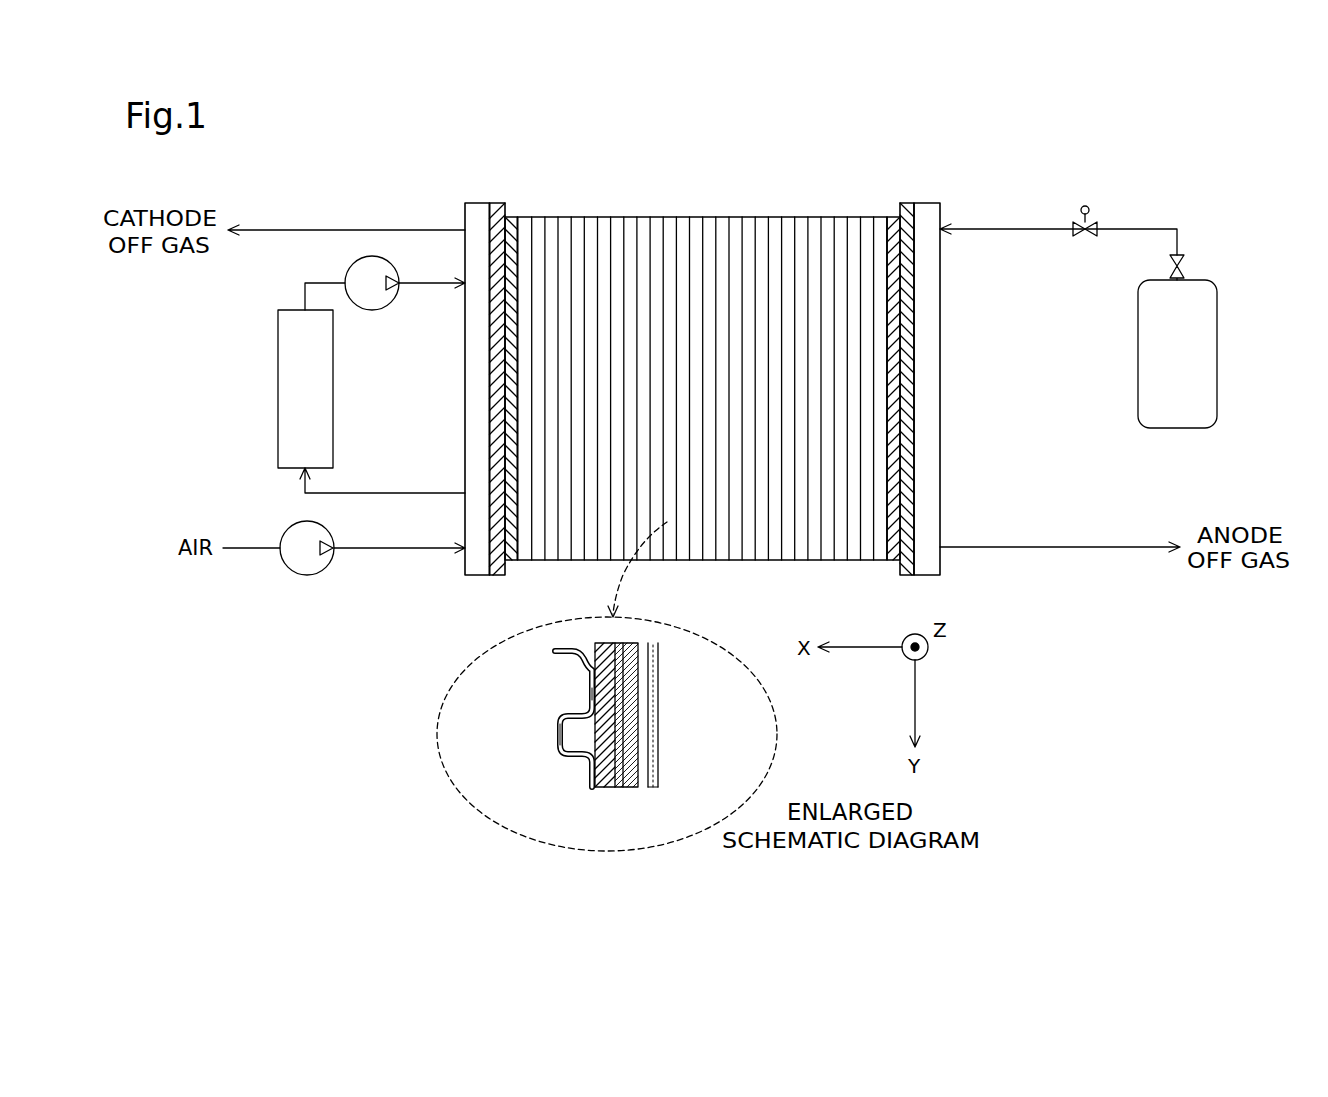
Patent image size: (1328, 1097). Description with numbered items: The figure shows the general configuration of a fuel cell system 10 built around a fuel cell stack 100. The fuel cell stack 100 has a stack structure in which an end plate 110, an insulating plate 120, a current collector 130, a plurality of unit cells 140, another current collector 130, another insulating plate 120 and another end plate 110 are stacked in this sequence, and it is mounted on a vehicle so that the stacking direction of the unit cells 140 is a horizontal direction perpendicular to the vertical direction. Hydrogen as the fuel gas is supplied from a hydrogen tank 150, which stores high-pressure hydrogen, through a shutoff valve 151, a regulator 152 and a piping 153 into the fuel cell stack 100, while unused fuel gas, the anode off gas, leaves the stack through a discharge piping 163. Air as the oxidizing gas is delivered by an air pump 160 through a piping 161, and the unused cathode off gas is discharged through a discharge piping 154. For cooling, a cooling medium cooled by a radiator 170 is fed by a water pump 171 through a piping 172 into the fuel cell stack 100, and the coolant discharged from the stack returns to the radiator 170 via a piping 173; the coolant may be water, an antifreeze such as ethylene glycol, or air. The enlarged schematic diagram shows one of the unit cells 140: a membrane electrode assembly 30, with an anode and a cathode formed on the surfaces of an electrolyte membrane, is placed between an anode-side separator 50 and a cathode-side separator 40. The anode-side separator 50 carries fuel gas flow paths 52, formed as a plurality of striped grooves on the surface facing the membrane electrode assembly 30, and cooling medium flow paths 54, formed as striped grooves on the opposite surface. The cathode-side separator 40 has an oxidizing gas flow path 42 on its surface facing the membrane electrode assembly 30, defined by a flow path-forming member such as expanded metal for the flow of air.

The fuel cell system 10 is at (341, 130).
The fuel cell stack 100 is at (940, 119).
The end plate 110 is at (477, 203).
The insulating plate 120 is at (497, 207).
The current collector 130 is at (508, 216).
The unit cell 140 is at (712, 216).
The hydrogen tank 150 is at (1217, 343).
The shutoff valve 151 is at (1185, 266).
The regulator 152 is at (1090, 240).
The piping 153 is at (1047, 229).
The discharge piping 154 is at (376, 229).
The air pump 160 is at (305, 575).
The piping 161 is at (397, 548).
The discharge piping 163 is at (1127, 546).
The radiator 170 is at (278, 386).
The water pump 171 is at (368, 311).
The piping 172 is at (423, 284).
The piping 173 is at (362, 493).
The membrane electrode assembly 30 is at (638, 790).
The cathode-side separator 40 is at (660, 715).
The oxidizing gas flow path 42 is at (645, 784).
The anode-side separator 50 is at (590, 790).
The fuel gas flow paths 52 is at (575, 648).
The cooling medium flow paths 54 is at (572, 690).